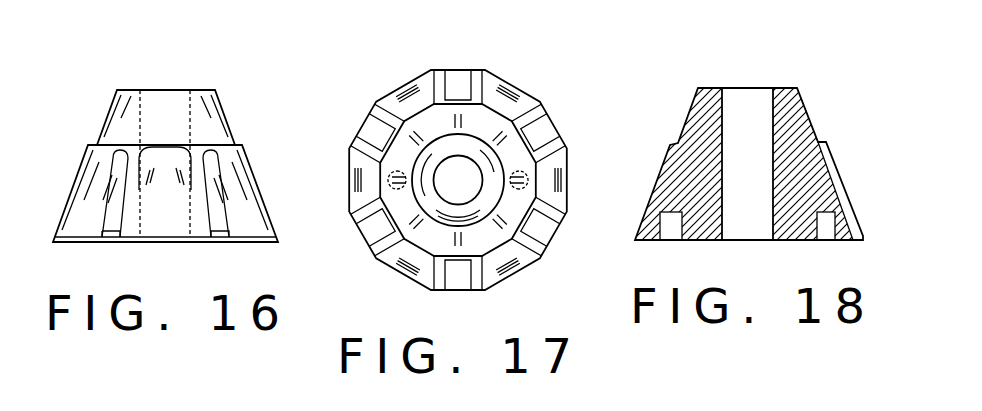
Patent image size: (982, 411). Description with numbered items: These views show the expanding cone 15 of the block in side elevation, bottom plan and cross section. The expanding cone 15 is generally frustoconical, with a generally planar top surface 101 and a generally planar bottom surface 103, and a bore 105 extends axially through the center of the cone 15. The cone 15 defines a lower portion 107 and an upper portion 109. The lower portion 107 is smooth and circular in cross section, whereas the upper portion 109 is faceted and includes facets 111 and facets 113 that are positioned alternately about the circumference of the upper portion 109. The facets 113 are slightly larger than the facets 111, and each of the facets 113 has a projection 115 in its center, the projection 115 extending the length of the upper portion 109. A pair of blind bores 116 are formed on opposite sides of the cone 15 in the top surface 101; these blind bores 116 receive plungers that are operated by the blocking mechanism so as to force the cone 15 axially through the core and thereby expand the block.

In FIG. 16, the expanding cone 15 is at (179, 165).
In FIG. 17, the expanding cone 15 is at (464, 162).
In FIG. 18, the expanding cone 15 is at (754, 157).
In FIG. 16, the top surface 101 is at (143, 242).
In FIG. 18, the top surface 101 is at (708, 243).
In FIG. 16, the bottom surface 103 is at (193, 89).
In FIG. 17, the bottom surface 103 is at (493, 238).
In FIG. 18, the bottom surface 103 is at (712, 88).
In FIG. 16, the bore 105 is at (141, 108).
In FIG. 17, the bore 105 is at (453, 129).
In FIG. 18, the bore 105 is at (723, 115).
In FIG. 16, the lower portion 107 is at (233, 119).
In FIG. 17, the lower portion 107 is at (454, 130).
In FIG. 18, the lower portion 107 is at (812, 120).
In FIG. 16, the upper portion 109 is at (263, 190).
In FIG. 17, the upper portion 109 is at (490, 180).
In FIG. 16, the facets 111 is at (165, 175).
In FIG. 17, the facets 111 is at (463, 169).
In FIG. 17, the facets 113 is at (543, 138).
In FIG. 16, the projection 115 is at (110, 230).
In FIG. 17, the projection 115 is at (472, 180).
In FIG. 18, the projection 115 is at (828, 162).
In FIG. 18, the blind bores 116 is at (674, 226).